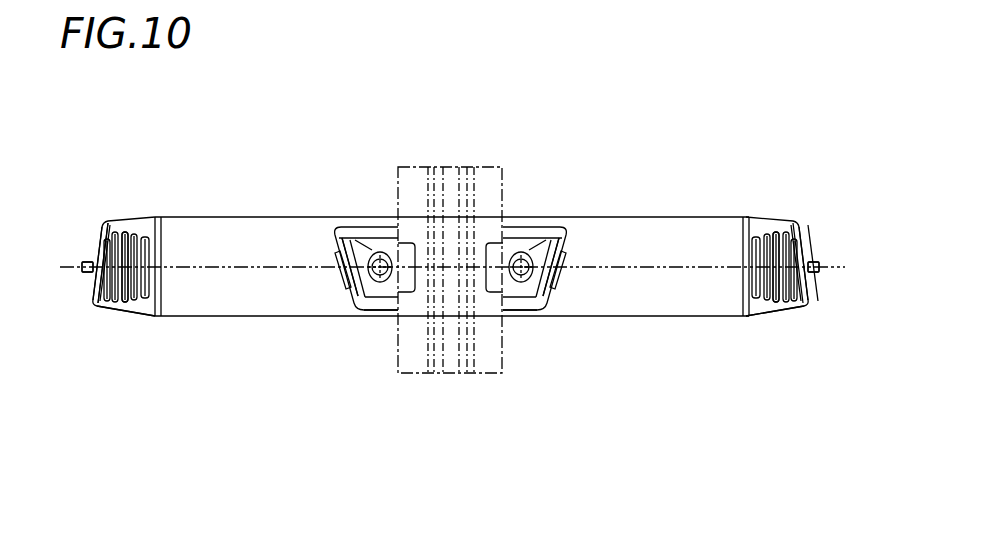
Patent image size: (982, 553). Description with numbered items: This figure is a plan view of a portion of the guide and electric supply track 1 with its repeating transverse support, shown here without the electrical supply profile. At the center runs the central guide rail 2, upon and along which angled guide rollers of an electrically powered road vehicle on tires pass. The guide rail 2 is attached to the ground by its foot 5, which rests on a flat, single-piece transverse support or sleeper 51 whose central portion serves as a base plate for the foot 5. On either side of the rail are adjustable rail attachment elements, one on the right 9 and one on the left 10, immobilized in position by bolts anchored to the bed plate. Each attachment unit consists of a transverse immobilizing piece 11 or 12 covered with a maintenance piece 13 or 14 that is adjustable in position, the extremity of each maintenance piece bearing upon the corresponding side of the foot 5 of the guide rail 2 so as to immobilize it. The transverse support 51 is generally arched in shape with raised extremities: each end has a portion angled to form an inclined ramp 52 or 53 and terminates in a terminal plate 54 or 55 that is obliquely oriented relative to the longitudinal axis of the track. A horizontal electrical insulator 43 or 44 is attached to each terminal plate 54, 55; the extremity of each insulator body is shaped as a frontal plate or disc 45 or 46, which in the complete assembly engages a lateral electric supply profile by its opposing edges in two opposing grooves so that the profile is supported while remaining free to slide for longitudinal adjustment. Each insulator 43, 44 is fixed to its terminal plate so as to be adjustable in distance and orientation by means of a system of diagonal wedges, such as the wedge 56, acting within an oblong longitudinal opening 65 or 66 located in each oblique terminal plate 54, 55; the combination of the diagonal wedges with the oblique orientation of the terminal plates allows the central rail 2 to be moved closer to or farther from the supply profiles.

The guide and electric supply track 1 is at (579, 160).
The central guide rail 2 is at (452, 300).
The foot 5 is at (450, 373).
The right rail attachment element 9 is at (320, 226).
The left rail attachment element 10 is at (560, 227).
The transverse immobilizing piece 11 is at (372, 312).
The transverse immobilizing piece 12 is at (533, 315).
The maintenance piece 13 is at (360, 252).
The maintenance piece 14 is at (540, 287).
The electrical insulator 43 is at (107, 211).
The electrical insulator 44 is at (790, 211).
The frontal plate or disc 45 is at (150, 242).
The frontal plate or disc 46 is at (753, 238).
The transverse support or sleeper 51 is at (288, 320).
The inclined ramp 52 is at (135, 307).
The inclined ramp 53 is at (762, 305).
The terminal plate 54 is at (95, 304).
The terminal plate 55 is at (808, 312).
The diagonal wedge 56 is at (90, 268).
The oblong longitudinal opening 65 is at (84, 273).
The oblong longitudinal opening 66 is at (806, 282).